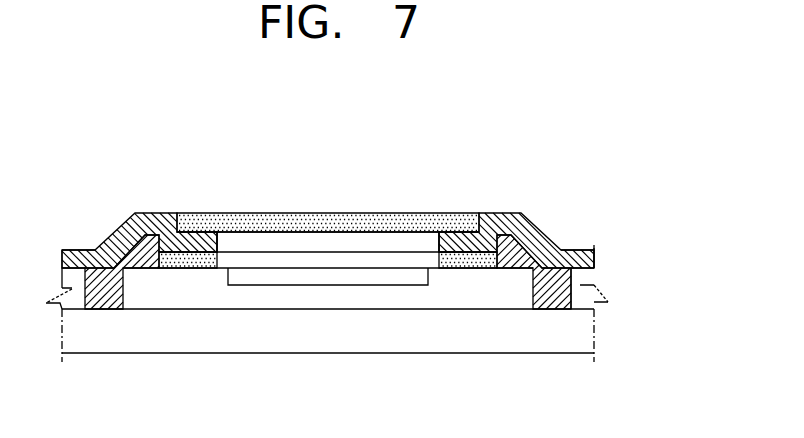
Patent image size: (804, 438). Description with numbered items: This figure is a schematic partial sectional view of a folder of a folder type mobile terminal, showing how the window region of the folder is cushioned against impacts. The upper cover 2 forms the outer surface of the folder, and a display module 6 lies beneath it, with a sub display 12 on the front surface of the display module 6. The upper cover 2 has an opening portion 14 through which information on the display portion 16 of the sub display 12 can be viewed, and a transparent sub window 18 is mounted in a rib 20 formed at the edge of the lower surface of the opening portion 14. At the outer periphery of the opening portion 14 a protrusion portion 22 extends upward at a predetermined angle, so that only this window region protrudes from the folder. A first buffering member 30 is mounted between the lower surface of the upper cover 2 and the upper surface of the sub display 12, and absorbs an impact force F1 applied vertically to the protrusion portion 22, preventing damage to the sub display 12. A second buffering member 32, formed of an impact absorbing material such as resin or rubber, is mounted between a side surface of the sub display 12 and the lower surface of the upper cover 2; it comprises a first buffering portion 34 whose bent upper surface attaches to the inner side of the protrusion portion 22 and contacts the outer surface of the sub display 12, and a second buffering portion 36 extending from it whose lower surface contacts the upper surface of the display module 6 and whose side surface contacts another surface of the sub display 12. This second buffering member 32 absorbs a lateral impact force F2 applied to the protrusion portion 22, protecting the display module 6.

The upper cover 2 is at (78, 262).
The display module 6 is at (396, 340).
The sub display 12 is at (290, 302).
The opening portion 14 is at (276, 238).
The display portion 16 is at (353, 277).
The transparent sub window 18 is at (357, 225).
The rib 20 is at (199, 216).
The protrusion portion 22 is at (128, 216).
The first buffering member 30 is at (186, 262).
The second buffering member 32 is at (678, 248).
The first buffering portion 34 is at (594, 258).
The second buffering portion 36 is at (569, 297).
The force F1 is at (498, 212).
The force F2 is at (542, 216).